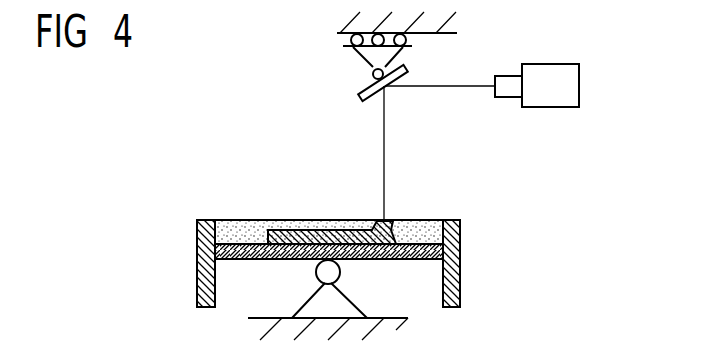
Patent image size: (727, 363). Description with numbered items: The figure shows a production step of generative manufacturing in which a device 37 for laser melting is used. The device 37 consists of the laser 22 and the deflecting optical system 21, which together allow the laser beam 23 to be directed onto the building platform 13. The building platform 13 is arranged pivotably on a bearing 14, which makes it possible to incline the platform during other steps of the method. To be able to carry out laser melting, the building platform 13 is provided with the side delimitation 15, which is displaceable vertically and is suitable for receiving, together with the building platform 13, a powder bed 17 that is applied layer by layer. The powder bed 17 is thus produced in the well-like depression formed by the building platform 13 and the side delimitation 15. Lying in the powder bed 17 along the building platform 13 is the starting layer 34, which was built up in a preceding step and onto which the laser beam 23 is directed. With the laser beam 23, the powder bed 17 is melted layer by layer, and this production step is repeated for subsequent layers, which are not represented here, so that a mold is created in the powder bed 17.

The device for laser melting 37 is at (471, 65).
The deflecting optical system 21 is at (370, 90).
The laser 22 is at (550, 98).
The laser beam 23 is at (384, 153).
The powder bed 17 is at (248, 225).
The starting layer 34 is at (335, 238).
The building platform 13 is at (223, 249).
The side delimitation 15 is at (455, 277).
The bearing 14 is at (335, 295).